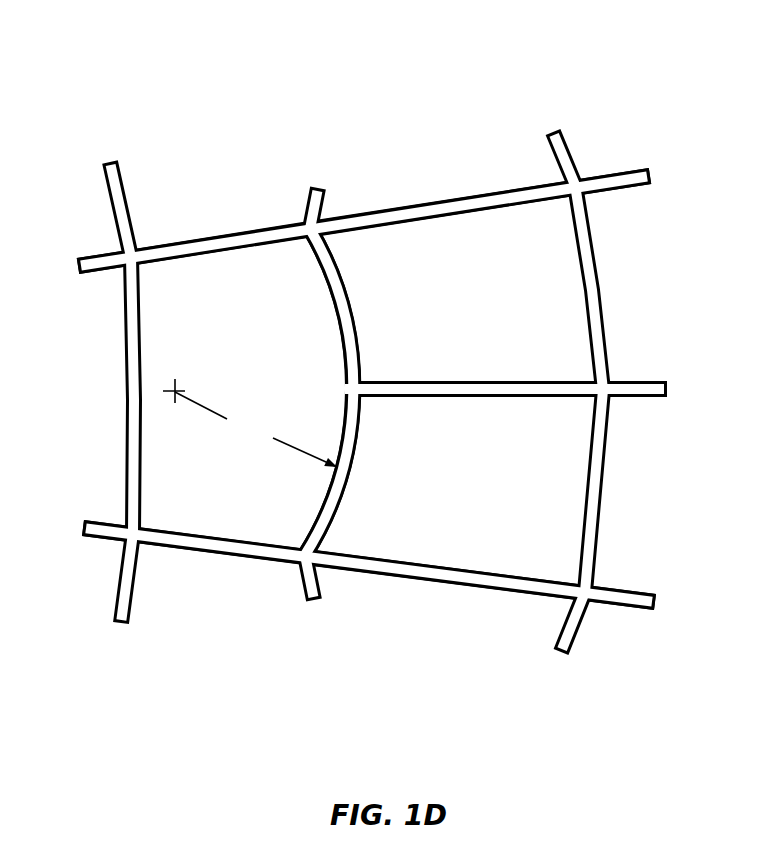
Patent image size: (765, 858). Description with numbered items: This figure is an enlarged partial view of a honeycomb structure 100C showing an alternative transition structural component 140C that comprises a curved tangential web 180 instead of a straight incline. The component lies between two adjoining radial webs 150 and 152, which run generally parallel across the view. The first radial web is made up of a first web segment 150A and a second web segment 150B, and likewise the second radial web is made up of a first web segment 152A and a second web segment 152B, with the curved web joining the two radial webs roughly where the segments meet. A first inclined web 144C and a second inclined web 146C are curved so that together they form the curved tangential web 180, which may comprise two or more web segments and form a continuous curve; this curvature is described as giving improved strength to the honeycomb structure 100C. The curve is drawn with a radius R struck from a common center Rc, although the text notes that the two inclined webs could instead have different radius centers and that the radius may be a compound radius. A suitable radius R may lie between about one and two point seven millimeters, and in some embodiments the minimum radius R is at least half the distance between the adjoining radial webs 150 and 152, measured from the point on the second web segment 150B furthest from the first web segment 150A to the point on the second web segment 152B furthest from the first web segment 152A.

The honeycomb structure 100C is at (372, 335).
The radial web 150 is at (253, 230).
The first web segment 150A is at (440, 202).
The second web segment 150B is at (197, 240).
The radial web 152 is at (233, 558).
The first web segment 152A is at (458, 585).
The second web segment 152B is at (184, 551).
The curved tangential web 180 is at (358, 340).
The first inclined web 144C is at (343, 284).
The second inclined web 146C is at (347, 484).
The alternative transition structural component 140C is at (390, 438).
The common center Rc is at (177, 390).
The radius R is at (256, 429).